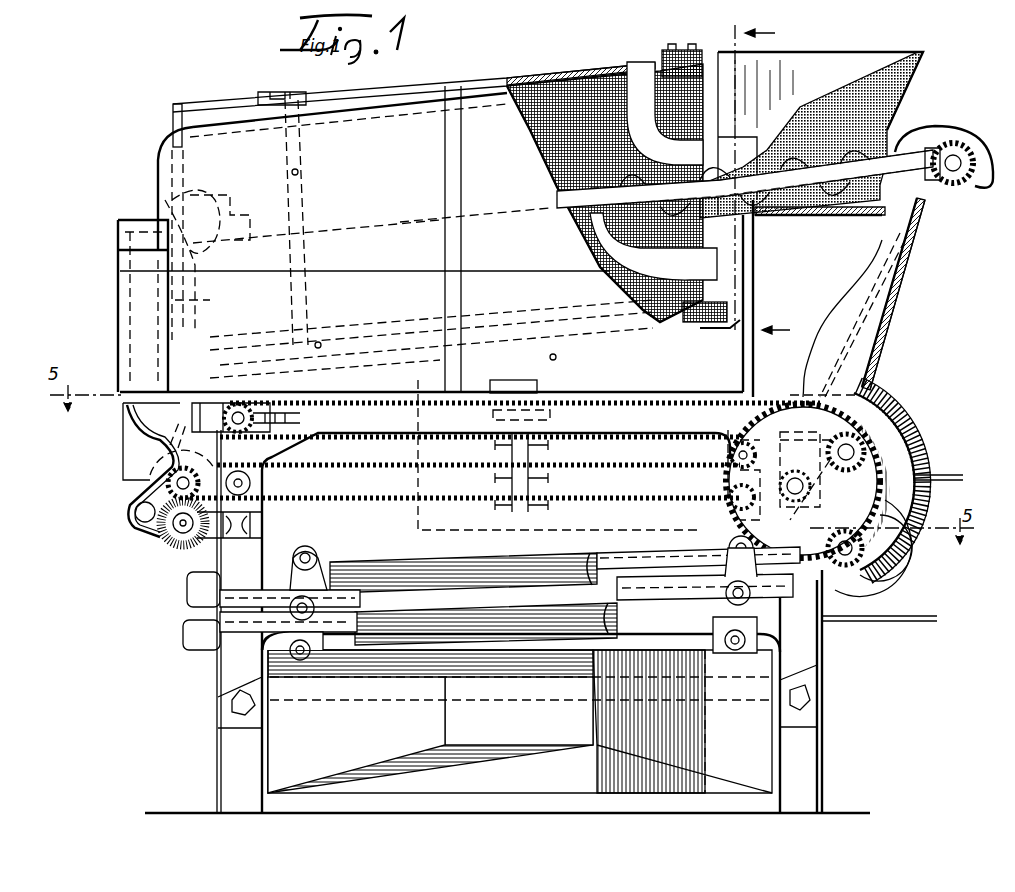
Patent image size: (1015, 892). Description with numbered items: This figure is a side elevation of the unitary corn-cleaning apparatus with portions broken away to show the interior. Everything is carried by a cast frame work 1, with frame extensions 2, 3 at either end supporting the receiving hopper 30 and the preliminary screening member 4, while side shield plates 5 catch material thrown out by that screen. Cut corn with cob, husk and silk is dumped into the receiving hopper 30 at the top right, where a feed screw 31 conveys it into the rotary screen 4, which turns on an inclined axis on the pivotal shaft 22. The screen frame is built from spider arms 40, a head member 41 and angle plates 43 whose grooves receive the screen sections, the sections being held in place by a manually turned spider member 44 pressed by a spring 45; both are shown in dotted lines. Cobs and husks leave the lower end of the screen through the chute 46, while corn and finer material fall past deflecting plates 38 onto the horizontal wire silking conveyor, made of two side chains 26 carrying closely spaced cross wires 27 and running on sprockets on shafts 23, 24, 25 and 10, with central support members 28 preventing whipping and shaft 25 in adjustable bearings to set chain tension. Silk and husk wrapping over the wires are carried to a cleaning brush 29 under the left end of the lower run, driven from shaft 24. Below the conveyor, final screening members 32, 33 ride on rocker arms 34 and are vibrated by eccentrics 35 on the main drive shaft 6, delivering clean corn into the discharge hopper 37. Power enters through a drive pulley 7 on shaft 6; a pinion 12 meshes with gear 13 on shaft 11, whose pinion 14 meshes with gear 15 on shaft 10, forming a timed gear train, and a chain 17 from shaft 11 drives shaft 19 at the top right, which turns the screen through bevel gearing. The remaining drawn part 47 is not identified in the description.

The cast frame work 1 is at (238, 663).
The frame extension 2 is at (945, 273).
The frame extension 3 is at (130, 300).
The preliminary screening member 4 is at (588, 96).
The side shield plates 5 is at (208, 153).
The main drive shaft 6 is at (862, 548).
The drive pulley 7 is at (895, 573).
The shaft 10 is at (868, 422).
The shaft 11 is at (860, 452).
The pinion 12 is at (882, 590).
The gear 13 is at (740, 510).
The pinion 14 is at (786, 487).
The gear 15 is at (866, 400).
The chain 17 is at (888, 335).
The shaft 19 is at (955, 145).
The shaft 22 is at (838, 220).
The shaft 23 is at (728, 453).
The shaft 24 is at (168, 488).
The shaft 25 is at (243, 405).
The side chains 26 is at (378, 470).
The cross wires 27 is at (370, 502).
The central support members 28 is at (550, 446).
The cleaning brush 29 is at (175, 545).
The receiving hopper 30 is at (838, 60).
The feed screw 31 is at (705, 170).
The final screening member 32 is at (500, 580).
The final screening member 33 is at (500, 612).
The rocker arms 34 is at (320, 566).
The eccentrics 35 is at (865, 603).
The discharge hopper 37 is at (521, 713).
The deflecting plates 38 is at (557, 357).
The spider arms 40 is at (300, 172).
The head member 41 is at (653, 171).
The angle plates 43 is at (270, 90).
The spider member 44 is at (210, 193).
The spring 45 is at (165, 200).
The chute 46 is at (122, 437).
The roller gaps 47 is at (580, 575).